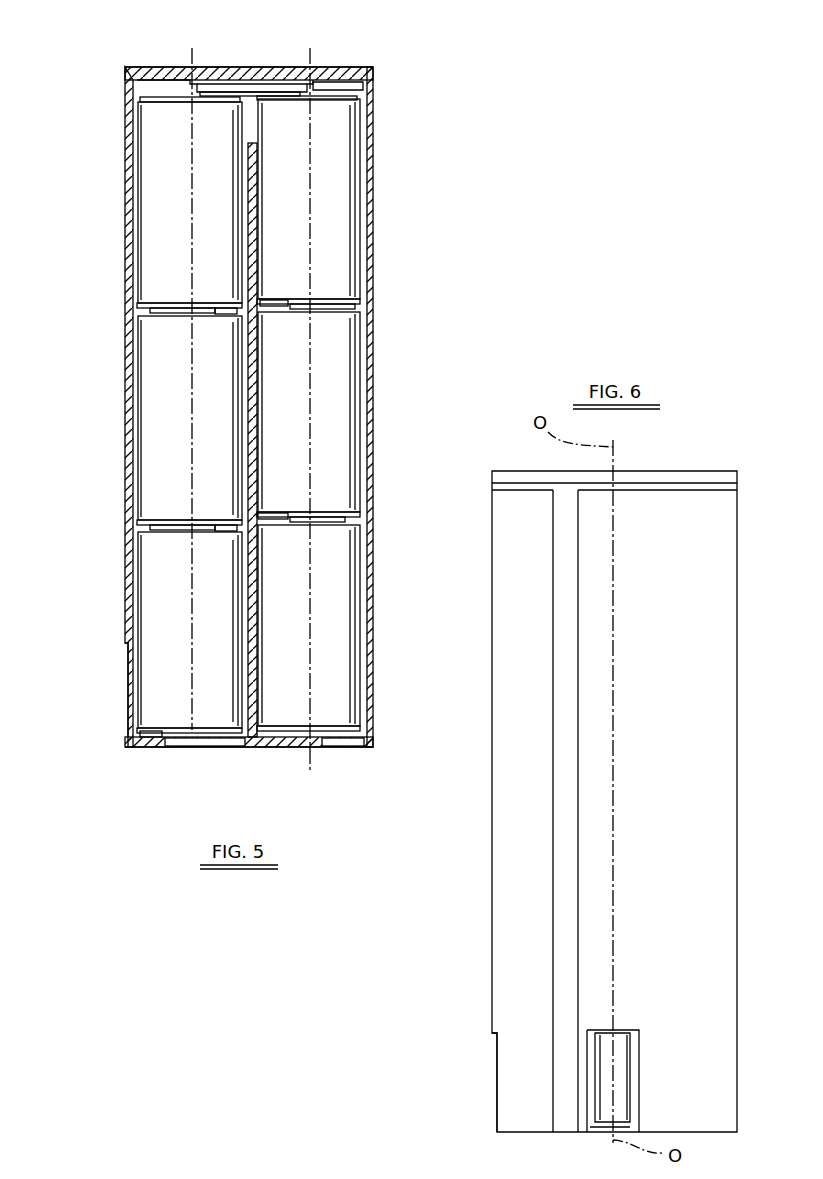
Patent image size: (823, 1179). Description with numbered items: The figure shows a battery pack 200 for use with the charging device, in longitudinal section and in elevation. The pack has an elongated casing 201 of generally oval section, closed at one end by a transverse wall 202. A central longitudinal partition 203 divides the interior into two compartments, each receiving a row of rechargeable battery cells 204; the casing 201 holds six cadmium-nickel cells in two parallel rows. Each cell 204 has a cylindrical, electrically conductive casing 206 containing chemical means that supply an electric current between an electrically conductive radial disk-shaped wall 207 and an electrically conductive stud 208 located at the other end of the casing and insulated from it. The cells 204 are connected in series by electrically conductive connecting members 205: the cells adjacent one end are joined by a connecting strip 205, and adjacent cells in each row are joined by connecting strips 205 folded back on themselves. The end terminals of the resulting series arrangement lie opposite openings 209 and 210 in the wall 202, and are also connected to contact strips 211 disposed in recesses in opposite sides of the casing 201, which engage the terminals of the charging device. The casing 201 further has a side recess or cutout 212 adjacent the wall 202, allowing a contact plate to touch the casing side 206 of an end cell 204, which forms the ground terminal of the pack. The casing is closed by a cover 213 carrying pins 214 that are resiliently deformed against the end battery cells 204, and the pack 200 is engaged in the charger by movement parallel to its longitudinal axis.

In FIG. 5, the battery pack 200 is at (378, 275).
In FIG. 6, the battery pack 200 is at (743, 590).
In FIG. 5, the casing 201 is at (370, 184).
In FIG. 6, the casing 201 is at (695, 770).
In FIG. 5, the transverse wall 202 is at (265, 750).
In FIG. 5, the central longitudinal partition 203 is at (253, 350).
In FIG. 5, the rechargeable battery cell 204 is at (325, 172).
In FIG. 5, the connecting member 205 is at (250, 95).
In FIG. 5, the casing of battery cell 206 is at (165, 160).
In FIG. 5, the radial disk-shaped wall 207 is at (225, 318).
In FIG. 5, the stud 208 is at (185, 100).
In FIG. 5, the opening 209 is at (182, 748).
In FIG. 5, the opening 210 is at (335, 750).
In FIG. 6, the contact strip 211 is at (618, 1087).
In FIG. 5, the side recess or cutout 212 is at (122, 703).
In FIG. 6, the side recess or cutout 212 is at (488, 1077).
In FIG. 5, the cover 213 is at (320, 72).
In FIG. 6, the cover 213 is at (655, 478).
In FIG. 5, the pin 214 is at (190, 84).